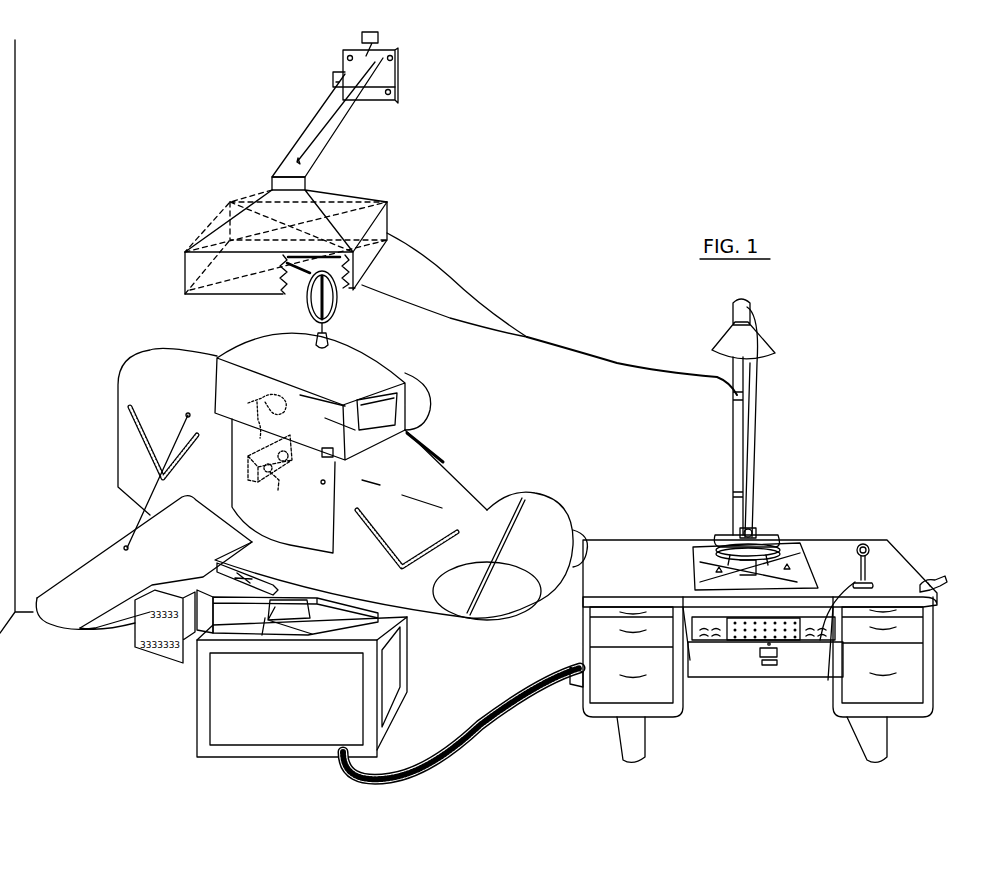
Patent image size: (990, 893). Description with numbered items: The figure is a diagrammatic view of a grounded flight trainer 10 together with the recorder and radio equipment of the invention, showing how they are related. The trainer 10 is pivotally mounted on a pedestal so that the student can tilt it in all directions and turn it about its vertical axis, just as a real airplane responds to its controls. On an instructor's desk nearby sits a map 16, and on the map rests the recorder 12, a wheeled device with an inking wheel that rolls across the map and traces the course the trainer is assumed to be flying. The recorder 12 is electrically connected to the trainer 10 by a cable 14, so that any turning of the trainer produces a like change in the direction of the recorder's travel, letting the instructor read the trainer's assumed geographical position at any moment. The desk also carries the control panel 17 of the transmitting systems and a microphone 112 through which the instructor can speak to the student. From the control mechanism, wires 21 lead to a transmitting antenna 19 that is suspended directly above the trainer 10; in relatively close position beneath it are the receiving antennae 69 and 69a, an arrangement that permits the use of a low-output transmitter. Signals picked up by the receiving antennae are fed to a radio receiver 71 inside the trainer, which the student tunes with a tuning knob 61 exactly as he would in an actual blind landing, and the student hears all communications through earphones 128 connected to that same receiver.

The trainer 10 is at (447, 485).
The recorder 12 is at (763, 537).
The cable 14 is at (497, 718).
The map 16 is at (805, 562).
The control panel 17 is at (750, 644).
The transmitting antenna 19 is at (262, 257).
The wires 21 is at (482, 310).
The tuning knob 61 is at (282, 491).
The receiving antenna 69 is at (316, 305).
The receiving antenna 69a is at (339, 304).
The radio receiver 71 is at (246, 473).
The microphone 112 is at (868, 544).
The earphones 128 is at (254, 416).